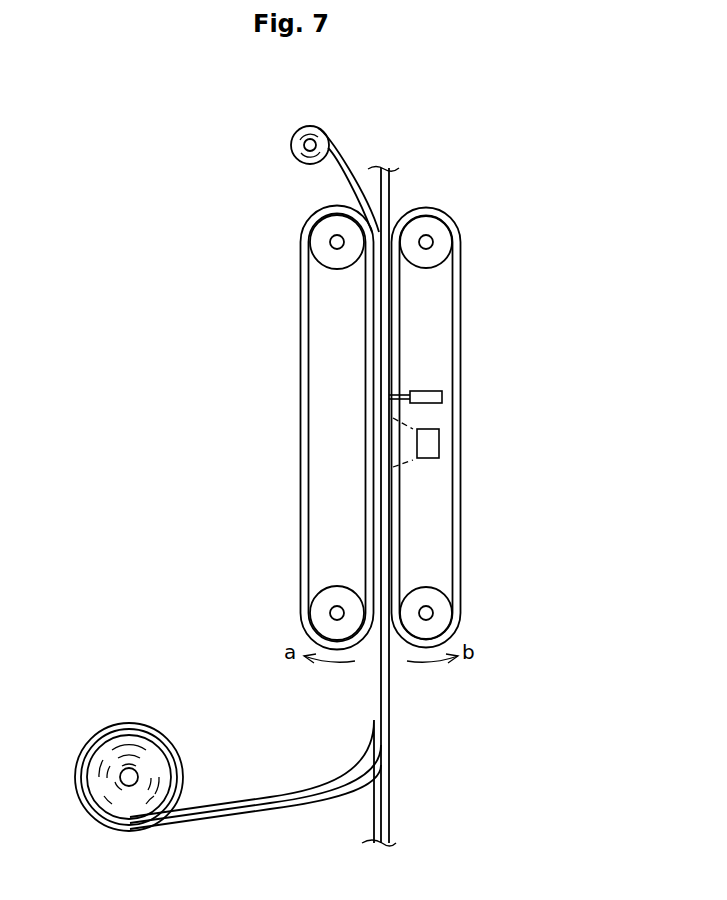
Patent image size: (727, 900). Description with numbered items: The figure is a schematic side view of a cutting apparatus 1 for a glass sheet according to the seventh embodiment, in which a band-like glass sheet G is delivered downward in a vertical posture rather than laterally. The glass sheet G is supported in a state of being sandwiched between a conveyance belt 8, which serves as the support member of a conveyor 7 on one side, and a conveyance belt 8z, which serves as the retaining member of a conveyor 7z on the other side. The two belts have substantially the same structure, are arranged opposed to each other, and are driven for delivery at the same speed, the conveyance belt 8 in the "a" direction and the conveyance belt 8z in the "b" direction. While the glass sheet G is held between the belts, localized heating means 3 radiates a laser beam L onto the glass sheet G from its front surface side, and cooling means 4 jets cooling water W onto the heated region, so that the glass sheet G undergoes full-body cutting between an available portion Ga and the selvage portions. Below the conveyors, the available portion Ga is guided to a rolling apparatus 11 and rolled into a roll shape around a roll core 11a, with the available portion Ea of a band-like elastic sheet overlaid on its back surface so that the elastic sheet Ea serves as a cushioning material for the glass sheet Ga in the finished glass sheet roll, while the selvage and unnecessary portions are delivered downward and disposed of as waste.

The cutting apparatus 1 is at (549, 252).
The localized heating means 3 is at (440, 444).
The cooling means 4 is at (443, 396).
The conveyor 7 is at (337, 409).
The conveyor 7z is at (441, 332).
The conveyance belt 8 is at (421, 347).
The conveyance belt 8z is at (393, 291).
The rolling apparatus 11 is at (93, 725).
The roll core 11a is at (123, 771).
The glass sheet G is at (390, 186).
The available portion Ga is at (247, 817).
The available portion of elastic sheet Ea is at (262, 806).
The cooling water W is at (403, 394).
The laser beam L is at (408, 462).